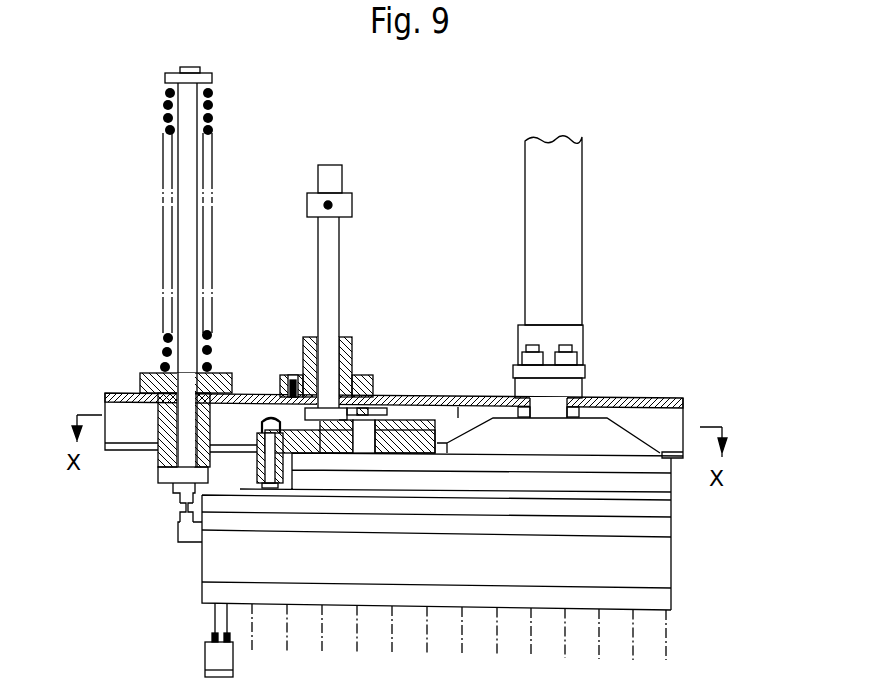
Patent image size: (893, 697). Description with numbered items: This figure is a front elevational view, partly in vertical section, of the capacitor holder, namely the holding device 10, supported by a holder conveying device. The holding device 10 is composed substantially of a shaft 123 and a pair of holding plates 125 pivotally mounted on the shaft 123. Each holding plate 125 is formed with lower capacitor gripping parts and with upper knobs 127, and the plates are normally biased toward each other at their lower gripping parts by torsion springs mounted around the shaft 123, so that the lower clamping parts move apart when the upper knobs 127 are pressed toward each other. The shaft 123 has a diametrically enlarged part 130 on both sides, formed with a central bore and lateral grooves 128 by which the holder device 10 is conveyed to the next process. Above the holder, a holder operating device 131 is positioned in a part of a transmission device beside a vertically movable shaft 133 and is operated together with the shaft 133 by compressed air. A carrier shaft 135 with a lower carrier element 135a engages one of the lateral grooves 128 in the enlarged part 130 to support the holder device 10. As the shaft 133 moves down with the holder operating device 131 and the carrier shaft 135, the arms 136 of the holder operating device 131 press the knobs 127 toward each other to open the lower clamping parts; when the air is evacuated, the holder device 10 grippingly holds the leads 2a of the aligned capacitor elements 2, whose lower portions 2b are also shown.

The capacitor element 2 is at (195, 658).
The leads 2a is at (213, 625).
The pin base 2b is at (202, 670).
The holding device 10 is at (196, 567).
The shaft 123 is at (658, 530).
The holding plates 125 is at (203, 597).
The upper knobs 127 is at (233, 503).
The lateral grooves 128 is at (180, 511).
The diametrically enlarged part 130 is at (172, 532).
The holder operating device 131 is at (397, 397).
The vertically movable shaft 133 is at (582, 187).
The carrier shaft 135 is at (204, 147).
The lower carrier element 135a is at (176, 489).
The arms 136 is at (308, 453).